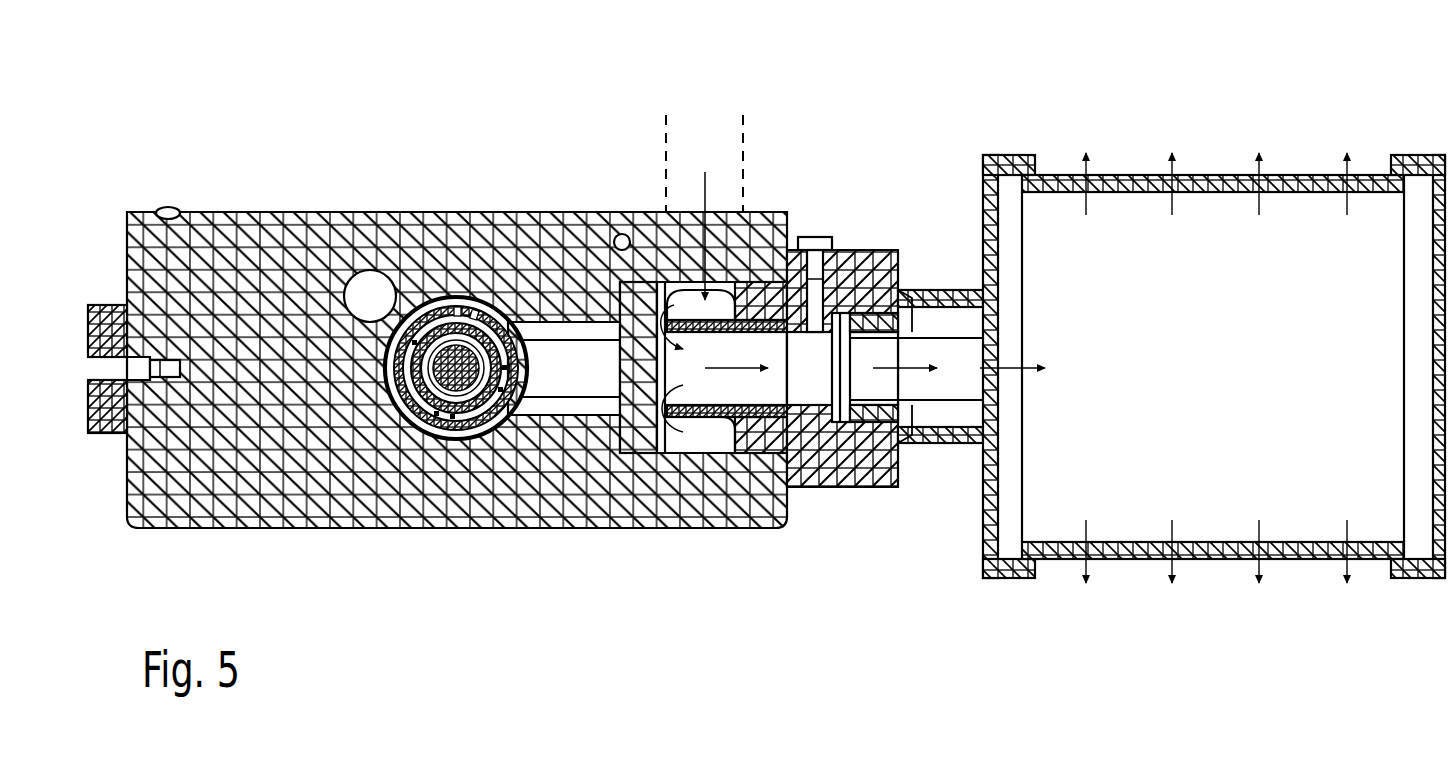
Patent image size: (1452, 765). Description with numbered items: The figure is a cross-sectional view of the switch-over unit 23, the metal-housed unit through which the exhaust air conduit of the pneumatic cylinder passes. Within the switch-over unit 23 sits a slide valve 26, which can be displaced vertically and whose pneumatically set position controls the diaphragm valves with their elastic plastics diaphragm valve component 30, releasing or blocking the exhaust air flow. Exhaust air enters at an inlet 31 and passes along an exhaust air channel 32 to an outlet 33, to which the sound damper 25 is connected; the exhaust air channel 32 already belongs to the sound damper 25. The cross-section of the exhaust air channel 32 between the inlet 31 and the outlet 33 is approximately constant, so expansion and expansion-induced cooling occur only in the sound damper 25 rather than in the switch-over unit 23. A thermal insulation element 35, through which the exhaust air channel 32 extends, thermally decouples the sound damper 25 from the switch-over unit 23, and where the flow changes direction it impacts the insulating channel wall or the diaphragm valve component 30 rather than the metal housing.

The switch-over unit 23 is at (434, 167).
The sound damper 25 is at (1224, 131).
The slide valve 26 is at (458, 378).
The elastic diaphragm valve component 30 is at (640, 405).
The inlet 31 is at (703, 143).
The exhaust air channel 32 is at (790, 380).
The outlet 33 is at (970, 353).
The thermal insulation element 35 is at (872, 273).